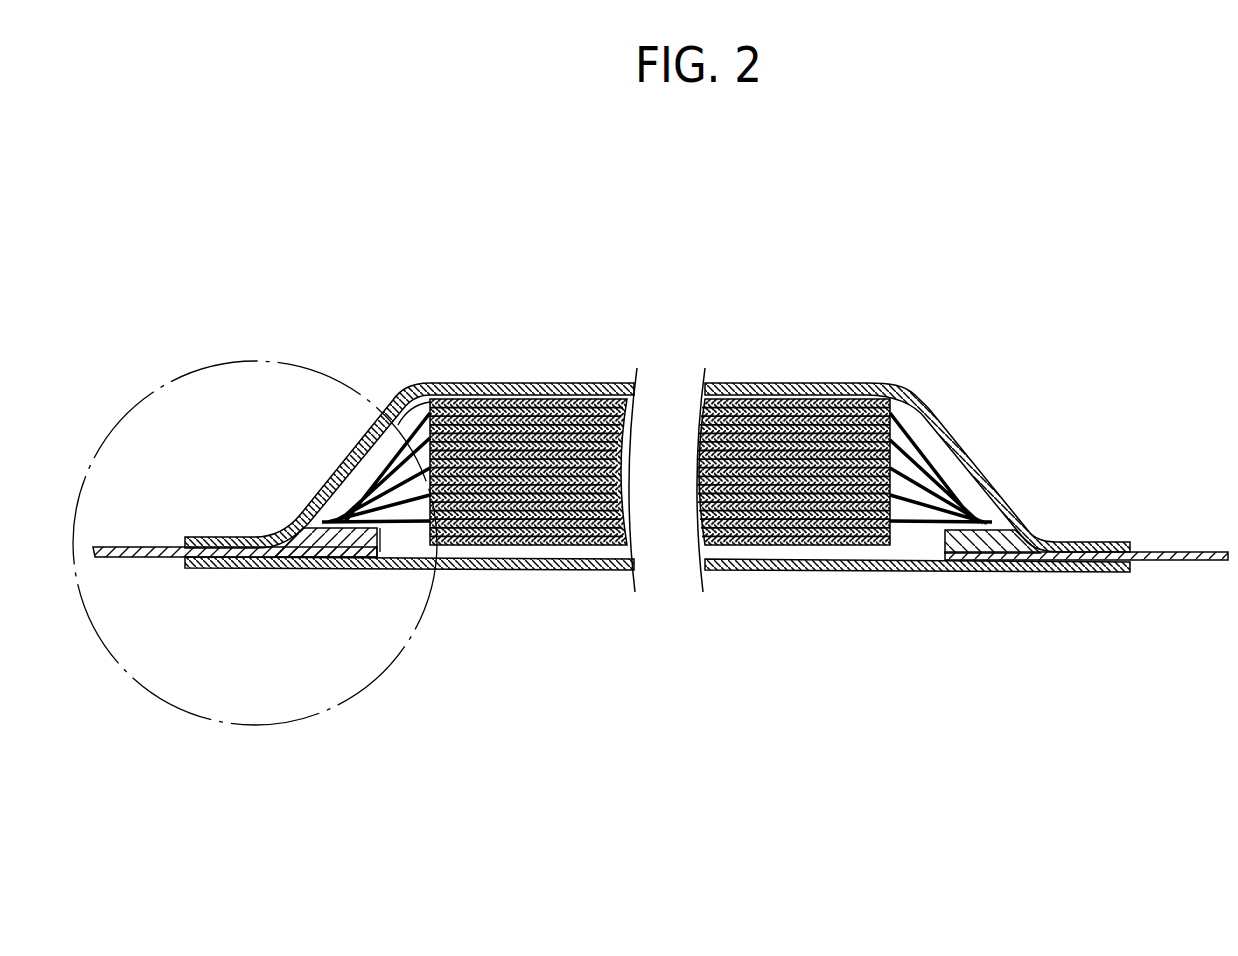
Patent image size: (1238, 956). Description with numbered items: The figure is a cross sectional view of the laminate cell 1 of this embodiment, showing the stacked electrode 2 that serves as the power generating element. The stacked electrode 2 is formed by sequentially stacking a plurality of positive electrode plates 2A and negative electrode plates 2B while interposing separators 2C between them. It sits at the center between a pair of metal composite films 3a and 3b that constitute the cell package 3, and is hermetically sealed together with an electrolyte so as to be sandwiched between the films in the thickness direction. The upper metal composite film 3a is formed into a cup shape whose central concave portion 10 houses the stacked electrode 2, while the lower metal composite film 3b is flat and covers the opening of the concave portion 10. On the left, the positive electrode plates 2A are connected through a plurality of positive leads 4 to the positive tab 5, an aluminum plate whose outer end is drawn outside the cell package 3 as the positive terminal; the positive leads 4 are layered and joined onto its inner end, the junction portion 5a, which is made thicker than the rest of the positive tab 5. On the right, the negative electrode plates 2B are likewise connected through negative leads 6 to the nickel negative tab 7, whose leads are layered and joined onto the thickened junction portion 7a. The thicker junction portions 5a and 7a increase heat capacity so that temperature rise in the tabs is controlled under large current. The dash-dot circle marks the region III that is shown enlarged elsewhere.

The laminate cell 1 is at (987, 268).
The stacked electrode 2 is at (500, 395).
The positive electrode plate 2A is at (580, 399).
The negative electrode plate 2B is at (830, 399).
The separator 2C is at (740, 399).
The cell package 3 is at (312, 489).
The metal composite film 3a is at (462, 382).
The metal composite film 3b is at (590, 570).
The positive lead 4 is at (405, 455).
The positive tab 5 is at (131, 547).
The junction portion 5a is at (331, 560).
The negative lead 6 is at (946, 500).
The negative tab 7 is at (1173, 552).
The junction portion 7a is at (994, 545).
The concave portion 10 is at (796, 399).
The detail region III is at (199, 368).